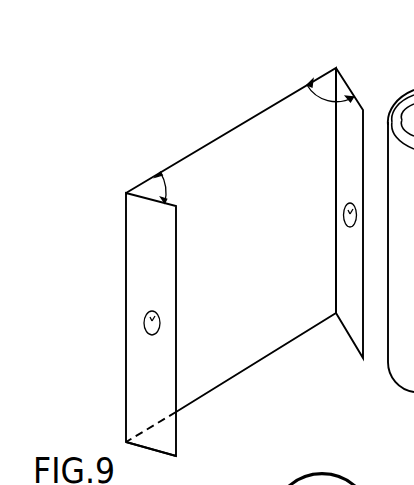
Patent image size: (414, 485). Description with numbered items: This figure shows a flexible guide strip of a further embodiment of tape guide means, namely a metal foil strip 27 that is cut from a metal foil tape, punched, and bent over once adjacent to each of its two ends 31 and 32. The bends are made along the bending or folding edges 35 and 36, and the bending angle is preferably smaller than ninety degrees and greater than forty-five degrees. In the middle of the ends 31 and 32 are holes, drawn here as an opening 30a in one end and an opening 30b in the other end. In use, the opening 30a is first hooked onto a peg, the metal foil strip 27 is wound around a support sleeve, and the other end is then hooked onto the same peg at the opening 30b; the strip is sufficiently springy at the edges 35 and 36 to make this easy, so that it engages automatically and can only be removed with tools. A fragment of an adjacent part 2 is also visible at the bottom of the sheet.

The metal foil strip 27 is at (232, 158).
The bending edge 35 is at (124, 247).
The bending edge 36 is at (334, 150).
The opening 30a is at (144, 323).
The opening 30b is at (350, 203).
The end of metal foil strip 31 is at (166, 437).
The end of metal foil strip 32 is at (346, 329).
The housing 2 is at (354, 479).